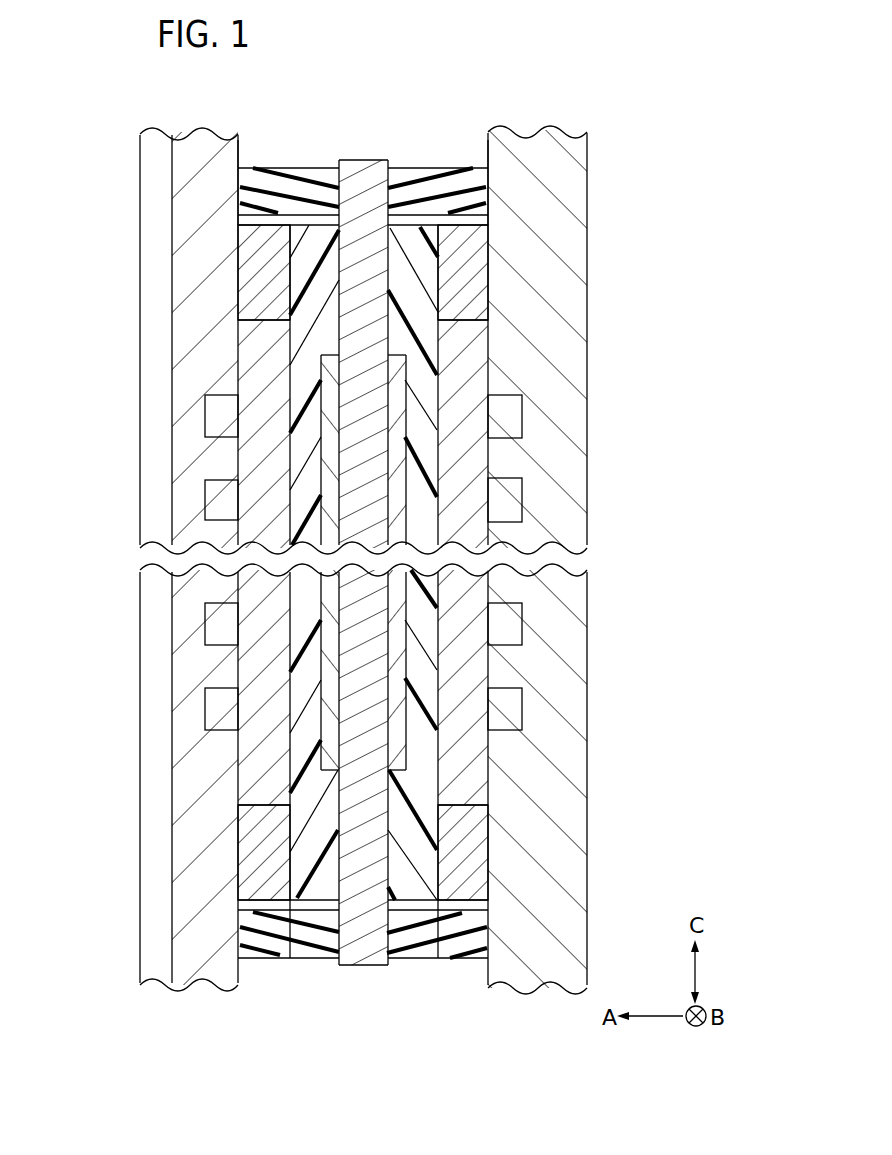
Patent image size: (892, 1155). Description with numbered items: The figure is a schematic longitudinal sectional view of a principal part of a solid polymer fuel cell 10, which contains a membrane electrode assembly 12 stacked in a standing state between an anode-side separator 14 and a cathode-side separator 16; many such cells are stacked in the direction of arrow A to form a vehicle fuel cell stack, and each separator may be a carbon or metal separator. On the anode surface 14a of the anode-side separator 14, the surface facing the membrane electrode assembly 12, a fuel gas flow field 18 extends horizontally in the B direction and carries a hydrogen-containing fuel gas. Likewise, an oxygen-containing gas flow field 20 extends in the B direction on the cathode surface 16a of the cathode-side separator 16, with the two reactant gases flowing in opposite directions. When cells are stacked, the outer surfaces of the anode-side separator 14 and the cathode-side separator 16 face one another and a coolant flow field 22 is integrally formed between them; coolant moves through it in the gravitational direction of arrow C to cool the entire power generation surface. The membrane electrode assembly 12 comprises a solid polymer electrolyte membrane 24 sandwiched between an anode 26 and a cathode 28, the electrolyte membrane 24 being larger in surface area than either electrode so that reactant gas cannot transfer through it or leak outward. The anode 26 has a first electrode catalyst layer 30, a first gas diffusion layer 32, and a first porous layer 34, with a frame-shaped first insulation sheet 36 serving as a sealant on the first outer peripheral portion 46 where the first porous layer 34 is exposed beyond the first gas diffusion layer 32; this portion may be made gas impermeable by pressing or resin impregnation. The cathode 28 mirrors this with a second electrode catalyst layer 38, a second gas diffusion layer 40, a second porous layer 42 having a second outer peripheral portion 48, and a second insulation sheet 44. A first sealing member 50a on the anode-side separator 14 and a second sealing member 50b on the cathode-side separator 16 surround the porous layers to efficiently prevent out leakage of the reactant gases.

The fuel cell 10 is at (595, 58).
The membrane electrode assembly 12 is at (383, 130).
The anode-side separator 14 is at (568, 157).
The anode surface 14a is at (487, 143).
The cathode-side separator 16 is at (180, 152).
The cathode surface 16a is at (243, 150).
The fuel gas flow field 18 is at (518, 712).
The oxygen-containing gas flow field 20 is at (210, 710).
The coolant flow field 22 is at (148, 217).
The solid polymer electrolyte membrane 24 is at (352, 165).
The anode 26 is at (640, 355).
The cathode 28 is at (90, 328).
The first electrode catalyst layer 30 is at (395, 453).
The first gas diffusion layer 32 is at (463, 383).
The first porous layer 34 is at (425, 512).
The first insulation sheet 36 is at (462, 287).
The second electrode catalyst layer 38 is at (330, 447).
The second gas diffusion layer 40 is at (252, 363).
The second porous layer 42 is at (298, 492).
The second insulation sheet 44 is at (257, 862).
The first outer peripheral portion 46 is at (415, 245).
The second outer peripheral portion 48 is at (303, 268).
The first sealing member 50a is at (433, 950).
The second sealing member 50b is at (294, 948).